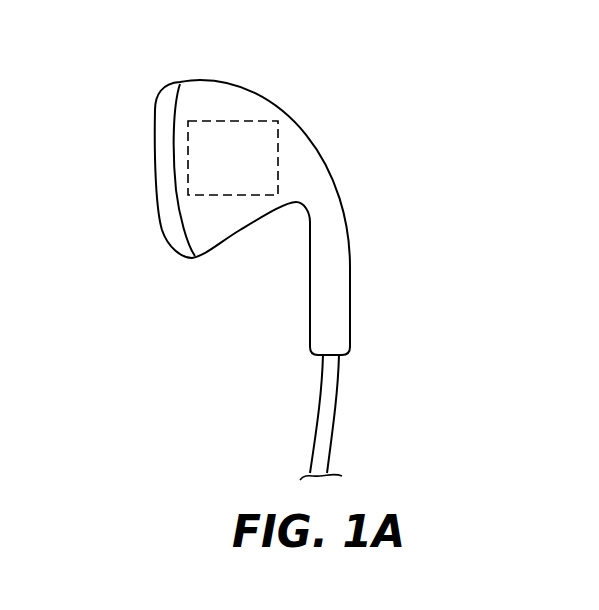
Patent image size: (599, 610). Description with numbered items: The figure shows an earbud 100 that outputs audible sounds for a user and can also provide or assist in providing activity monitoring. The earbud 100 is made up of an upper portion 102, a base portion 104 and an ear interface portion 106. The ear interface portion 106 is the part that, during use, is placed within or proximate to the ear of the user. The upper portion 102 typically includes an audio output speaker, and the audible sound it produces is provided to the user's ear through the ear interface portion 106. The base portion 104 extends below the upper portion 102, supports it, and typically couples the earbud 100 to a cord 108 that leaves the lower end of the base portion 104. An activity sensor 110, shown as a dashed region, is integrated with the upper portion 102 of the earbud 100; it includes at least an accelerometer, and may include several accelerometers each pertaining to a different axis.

The earbud 100 is at (258, 246).
The upper portion 102 is at (226, 95).
The base portion 104 is at (325, 288).
The ear interface portion 106 is at (157, 175).
The cord 108 is at (330, 407).
The activity sensor 110 is at (255, 168).